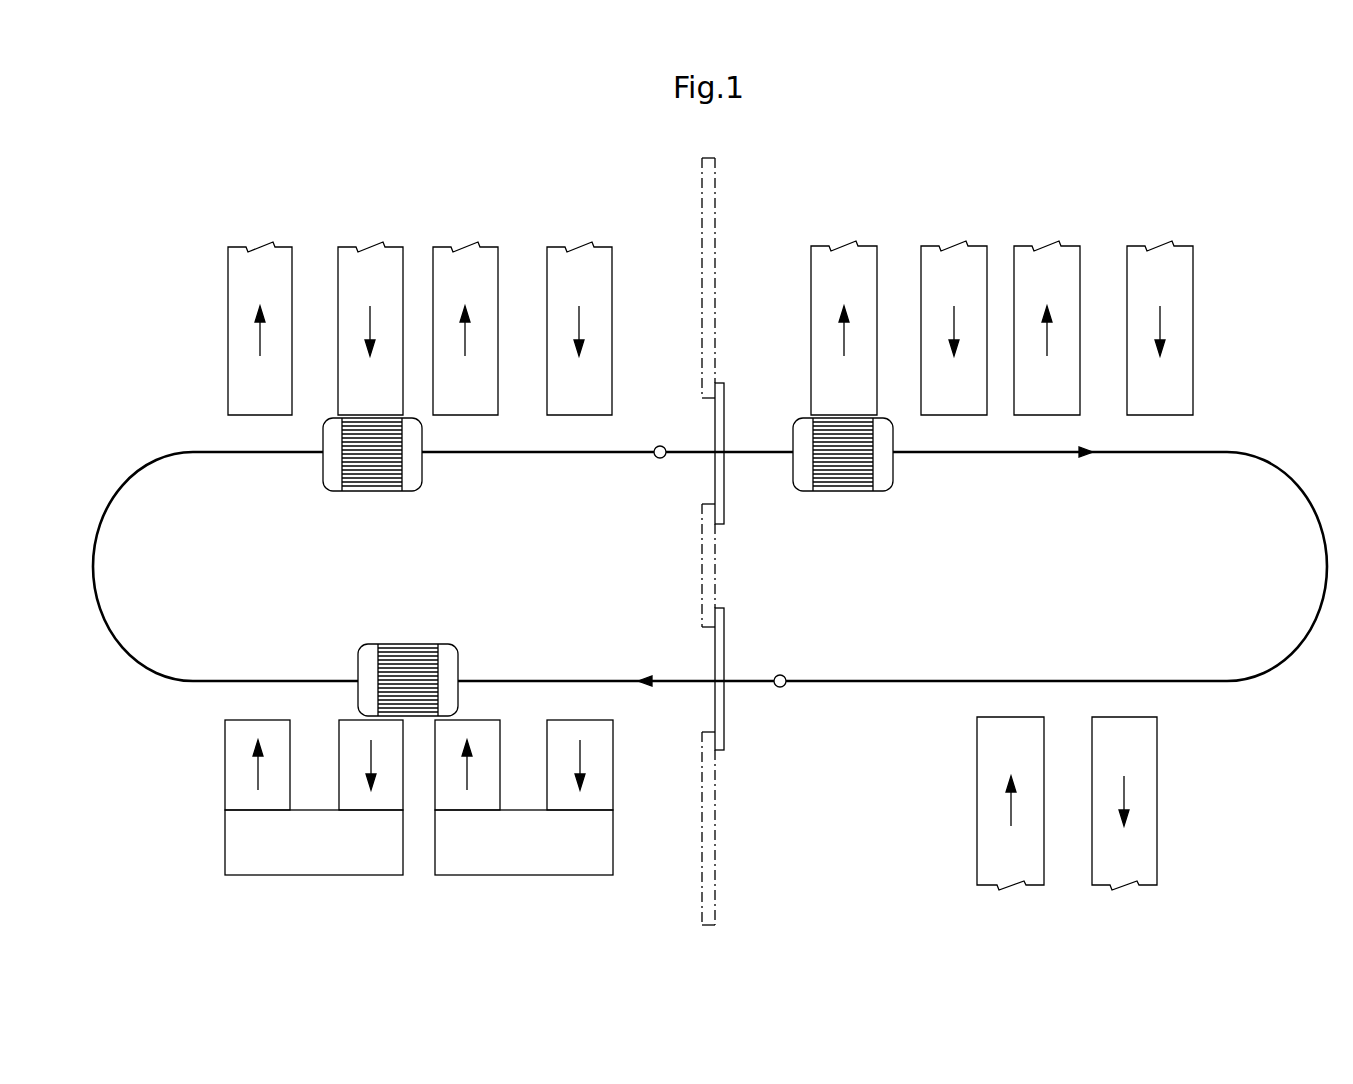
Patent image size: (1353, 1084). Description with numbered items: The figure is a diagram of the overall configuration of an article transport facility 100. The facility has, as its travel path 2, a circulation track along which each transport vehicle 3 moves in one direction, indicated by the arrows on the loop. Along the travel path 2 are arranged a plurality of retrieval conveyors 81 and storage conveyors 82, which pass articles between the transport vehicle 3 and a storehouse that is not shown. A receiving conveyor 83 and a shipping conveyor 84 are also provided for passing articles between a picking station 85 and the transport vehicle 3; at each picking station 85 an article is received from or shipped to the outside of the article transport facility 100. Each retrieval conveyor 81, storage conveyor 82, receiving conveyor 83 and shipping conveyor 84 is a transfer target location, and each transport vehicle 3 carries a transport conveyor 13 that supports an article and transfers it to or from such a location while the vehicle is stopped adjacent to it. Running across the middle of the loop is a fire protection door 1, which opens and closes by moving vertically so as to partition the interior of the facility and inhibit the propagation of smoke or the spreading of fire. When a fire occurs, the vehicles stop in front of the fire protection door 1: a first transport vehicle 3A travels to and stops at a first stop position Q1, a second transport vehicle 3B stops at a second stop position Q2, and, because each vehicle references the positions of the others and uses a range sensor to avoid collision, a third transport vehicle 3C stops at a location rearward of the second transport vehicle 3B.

The article transport facility 100 is at (200, 150).
The fire protection door 1 is at (724, 622).
The travel path 2 is at (923, 681).
The transport vehicle 3 is at (666, 567).
The first transport vehicle 3A is at (893, 473).
The second transport vehicle 3B is at (430, 487).
The third transport vehicle 3C is at (458, 665).
The transport conveyor 13 is at (363, 490).
The retrieval conveyor 81 is at (337, 268).
The storage conveyor 82 is at (228, 275).
The receiving conveyor 83 is at (225, 752).
The shipping conveyor 84 is at (613, 763).
The picking station 85 is at (378, 822).
The first stop position Q1 is at (780, 675).
The second stop position Q2 is at (660, 458).